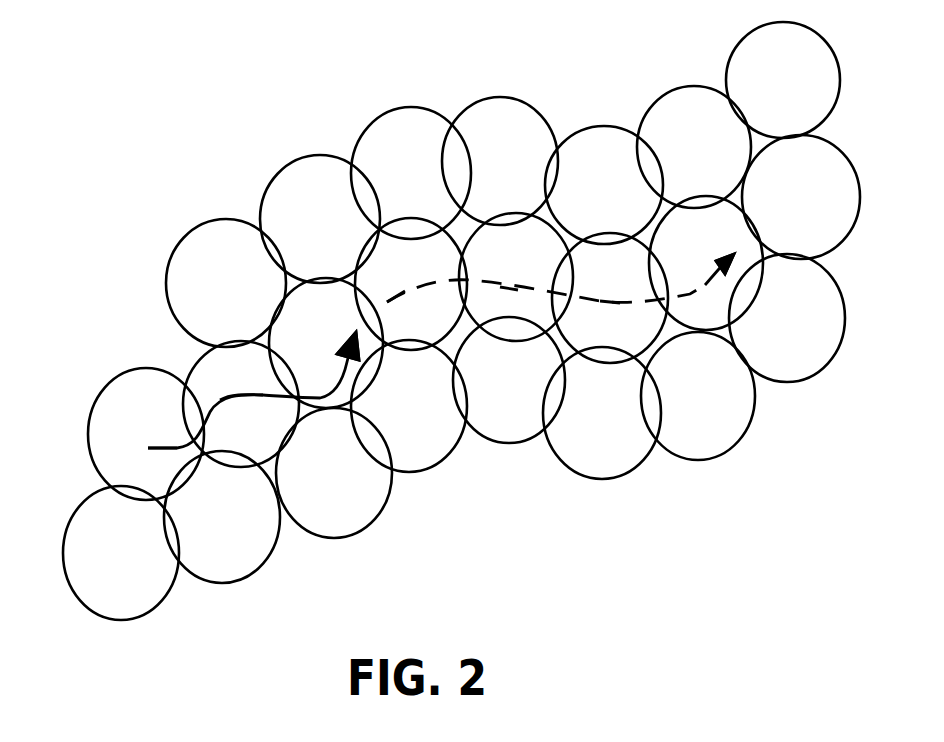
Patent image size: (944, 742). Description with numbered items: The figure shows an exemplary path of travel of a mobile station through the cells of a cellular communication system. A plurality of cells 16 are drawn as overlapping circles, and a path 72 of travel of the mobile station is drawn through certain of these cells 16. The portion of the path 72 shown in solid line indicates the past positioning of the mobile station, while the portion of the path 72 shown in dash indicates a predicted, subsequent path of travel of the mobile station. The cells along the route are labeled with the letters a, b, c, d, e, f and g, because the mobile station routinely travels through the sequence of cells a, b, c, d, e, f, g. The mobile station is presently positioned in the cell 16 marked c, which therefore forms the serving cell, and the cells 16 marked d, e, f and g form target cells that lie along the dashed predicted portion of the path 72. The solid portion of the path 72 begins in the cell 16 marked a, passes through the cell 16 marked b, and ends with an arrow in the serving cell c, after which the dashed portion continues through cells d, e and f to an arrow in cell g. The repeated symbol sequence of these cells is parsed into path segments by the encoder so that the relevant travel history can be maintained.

The cells 16 is at (807, 346).
The path 72 is at (212, 377).
The cell a is at (142, 443).
The cell b is at (241, 421).
The cell c is at (328, 343).
The cell d is at (388, 279).
The cell e is at (513, 273).
The cell f is at (618, 284).
The cell g is at (726, 249).